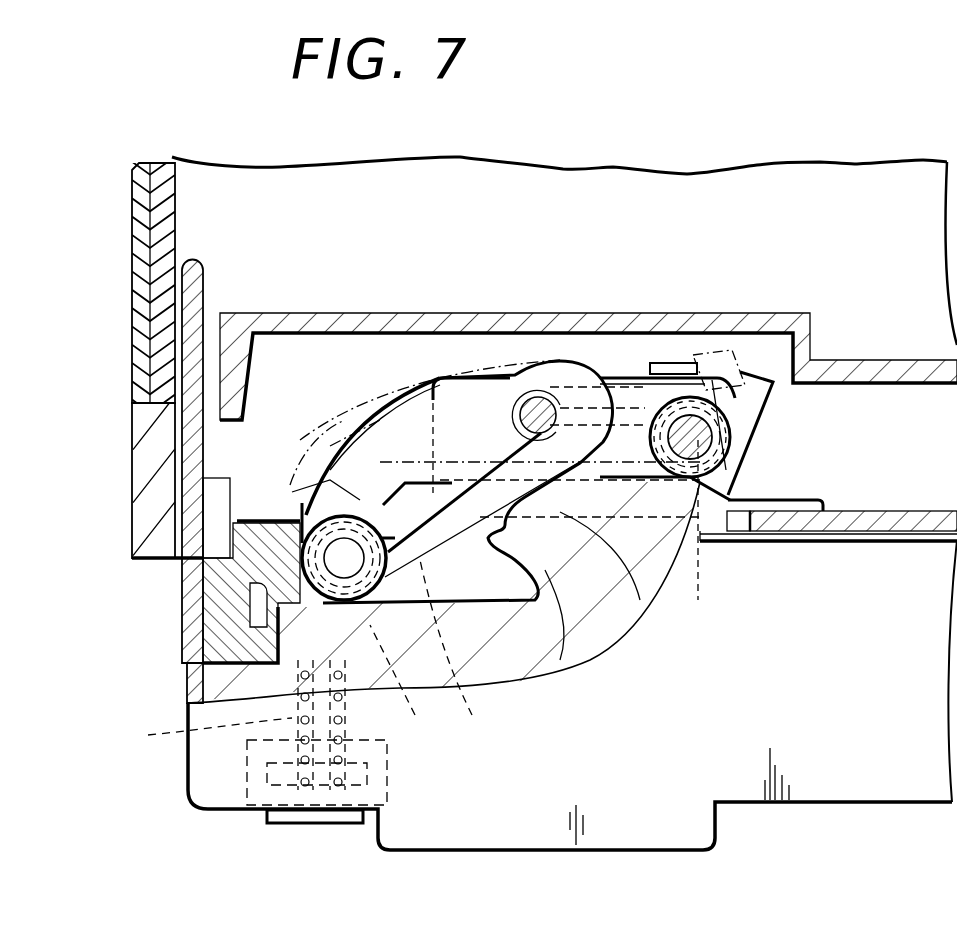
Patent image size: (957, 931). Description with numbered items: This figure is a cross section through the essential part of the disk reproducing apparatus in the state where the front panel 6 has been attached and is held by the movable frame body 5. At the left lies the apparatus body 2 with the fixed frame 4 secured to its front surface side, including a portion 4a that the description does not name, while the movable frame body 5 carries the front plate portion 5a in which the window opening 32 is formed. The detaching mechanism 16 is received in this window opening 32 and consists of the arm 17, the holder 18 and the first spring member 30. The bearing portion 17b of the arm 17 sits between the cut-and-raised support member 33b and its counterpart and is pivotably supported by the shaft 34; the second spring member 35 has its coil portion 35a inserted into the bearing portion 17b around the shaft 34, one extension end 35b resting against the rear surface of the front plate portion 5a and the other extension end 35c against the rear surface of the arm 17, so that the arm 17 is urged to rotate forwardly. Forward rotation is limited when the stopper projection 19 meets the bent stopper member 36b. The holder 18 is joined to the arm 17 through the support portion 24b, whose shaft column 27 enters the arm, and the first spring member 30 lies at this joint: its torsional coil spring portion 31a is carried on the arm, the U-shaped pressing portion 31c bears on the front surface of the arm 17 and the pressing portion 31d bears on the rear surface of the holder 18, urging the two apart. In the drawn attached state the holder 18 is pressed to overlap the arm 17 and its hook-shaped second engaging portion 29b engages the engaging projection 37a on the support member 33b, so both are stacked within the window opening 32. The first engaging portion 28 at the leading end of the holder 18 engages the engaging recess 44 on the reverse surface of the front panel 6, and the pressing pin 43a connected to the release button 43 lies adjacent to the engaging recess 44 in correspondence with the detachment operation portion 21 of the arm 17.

The apparatus body 2 is at (133, 212).
The fixed frame 4 is at (150, 465).
The upper plate 4a is at (897, 382).
The movable frame body 5 is at (903, 533).
The front plate portion 5a is at (848, 543).
The front panel 6 is at (870, 803).
The detaching mechanism 16 is at (406, 392).
The arm 17 is at (385, 418).
The bearing portion 17b is at (624, 368).
The holder 18 is at (628, 598).
The stopper projection 19 is at (752, 378).
The detachment operation portion 21 is at (410, 525).
The support portion 24b is at (298, 553).
The shaft column 27 is at (330, 572).
The first engaging portion 28 is at (528, 612).
The second engaging portion 29b is at (547, 370).
The first spring member 30 is at (306, 505).
The torsional coil spring portion 31a is at (409, 686).
The pressing portion 31c is at (330, 446).
The pressing portion 31d is at (469, 653).
The window opening 32 is at (292, 492).
The support member 33b is at (460, 378).
The shaft 34 is at (727, 450).
The second spring member 35 is at (732, 430).
The coil portion 35a is at (660, 545).
The extension end 35b is at (785, 507).
The extension end 35c is at (592, 350).
The stopper member 36b is at (668, 362).
The engaging projection 37a is at (528, 402).
The release button 43 is at (292, 826).
The pressing pin 43a is at (187, 732).
The engaging recess 44 is at (560, 630).